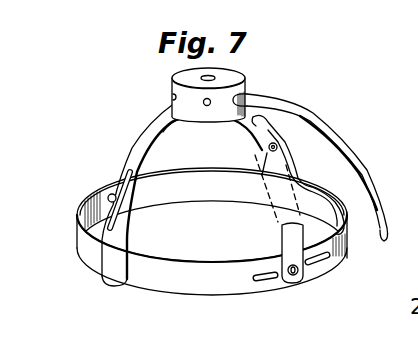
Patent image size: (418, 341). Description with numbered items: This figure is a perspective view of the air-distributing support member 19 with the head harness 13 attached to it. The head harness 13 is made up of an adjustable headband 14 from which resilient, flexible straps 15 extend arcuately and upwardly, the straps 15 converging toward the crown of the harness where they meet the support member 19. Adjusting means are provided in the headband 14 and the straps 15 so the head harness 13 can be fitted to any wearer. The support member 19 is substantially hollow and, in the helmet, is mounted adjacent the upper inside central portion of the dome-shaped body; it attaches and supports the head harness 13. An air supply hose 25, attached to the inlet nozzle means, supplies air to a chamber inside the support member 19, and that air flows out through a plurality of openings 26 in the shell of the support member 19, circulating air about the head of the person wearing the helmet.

The head harness 13 is at (104, 146).
The adjustable headband 14 is at (218, 187).
The straps 15 is at (158, 133).
The air-distributing support member 19 is at (139, 91).
The air supply hose 25 is at (371, 169).
The openings 26 is at (203, 104).